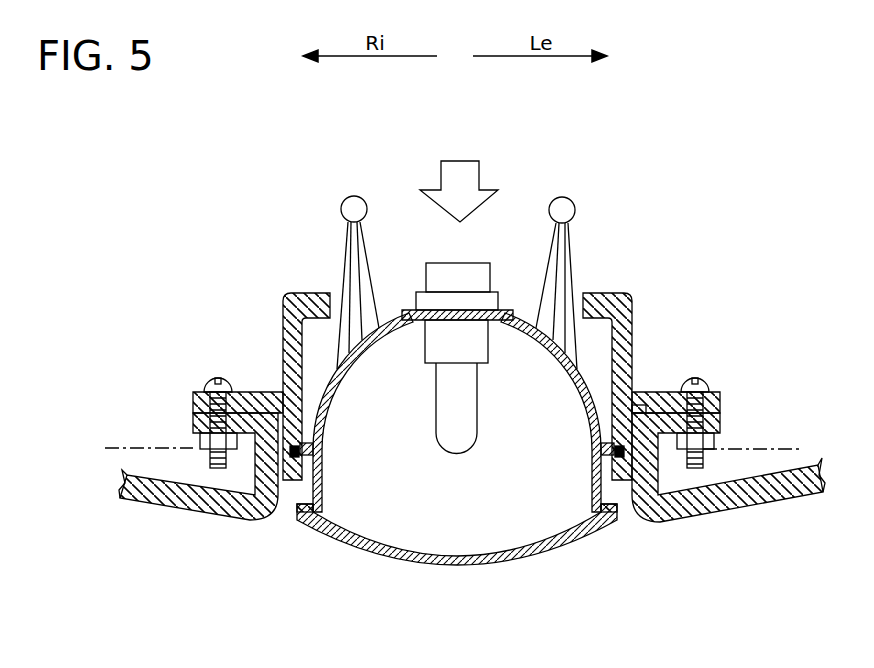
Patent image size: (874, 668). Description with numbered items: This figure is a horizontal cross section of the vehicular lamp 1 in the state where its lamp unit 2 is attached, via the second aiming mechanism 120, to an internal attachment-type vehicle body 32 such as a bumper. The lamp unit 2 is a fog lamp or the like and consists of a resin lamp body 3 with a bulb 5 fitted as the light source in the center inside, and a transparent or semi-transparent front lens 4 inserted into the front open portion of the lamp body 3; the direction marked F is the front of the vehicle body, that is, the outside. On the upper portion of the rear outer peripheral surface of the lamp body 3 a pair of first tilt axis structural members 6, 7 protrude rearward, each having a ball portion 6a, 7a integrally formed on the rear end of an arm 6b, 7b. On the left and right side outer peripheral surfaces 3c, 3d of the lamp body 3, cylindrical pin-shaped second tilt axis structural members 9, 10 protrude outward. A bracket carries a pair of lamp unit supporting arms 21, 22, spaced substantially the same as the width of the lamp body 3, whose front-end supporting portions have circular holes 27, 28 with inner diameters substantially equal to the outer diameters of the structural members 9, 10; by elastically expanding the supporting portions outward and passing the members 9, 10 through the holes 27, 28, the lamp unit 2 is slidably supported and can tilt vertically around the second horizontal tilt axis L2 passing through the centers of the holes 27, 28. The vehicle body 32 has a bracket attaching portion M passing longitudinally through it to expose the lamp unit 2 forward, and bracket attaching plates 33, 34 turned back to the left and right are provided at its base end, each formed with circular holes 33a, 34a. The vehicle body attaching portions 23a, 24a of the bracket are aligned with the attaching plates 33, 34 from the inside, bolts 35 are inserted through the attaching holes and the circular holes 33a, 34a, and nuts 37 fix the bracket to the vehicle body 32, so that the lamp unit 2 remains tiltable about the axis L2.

The vehicular lamp 1 is at (394, 590).
The lamp unit 2 is at (410, 421).
The lamp body 3 is at (330, 400).
The side outer peripheral surface 3c is at (611, 500).
The side outer peripheral surface 3d is at (305, 490).
The front lens 4 is at (362, 540).
The bulb 5 is at (466, 414).
The first tilt axis structural member 6 is at (658, 148).
The ball portion 6a is at (565, 208).
The arm 6b is at (563, 249).
The first tilt axis structural member 7 is at (252, 148).
The ball portion 7a is at (352, 208).
The arm 7b is at (352, 249).
The second tilt axis structural member 9 is at (640, 408).
The second tilt axis structural member 10 is at (278, 422).
The lamp unit supporting arm 21 is at (632, 312).
The lamp unit supporting arm 22 is at (283, 302).
The vehicle body attaching portion 23a is at (722, 393).
The vehicle body attaching portion 24a is at (193, 393).
The circular hole 27 is at (596, 446).
The circular hole 28 is at (318, 446).
The vehicle body 32 is at (756, 512).
The bracket attaching plate 33 is at (722, 427).
The circular hole 33a is at (702, 455).
The bracket attaching plate 34 is at (193, 425).
The circular hole 34a is at (217, 428).
The bolt 35 is at (216, 377).
The nut 37 is at (205, 447).
The second aiming mechanism 120 is at (273, 341).
The front direction F is at (459, 179).
The bracket attaching portion M is at (631, 501).
The second horizontal tilt axis L2 is at (105, 448).